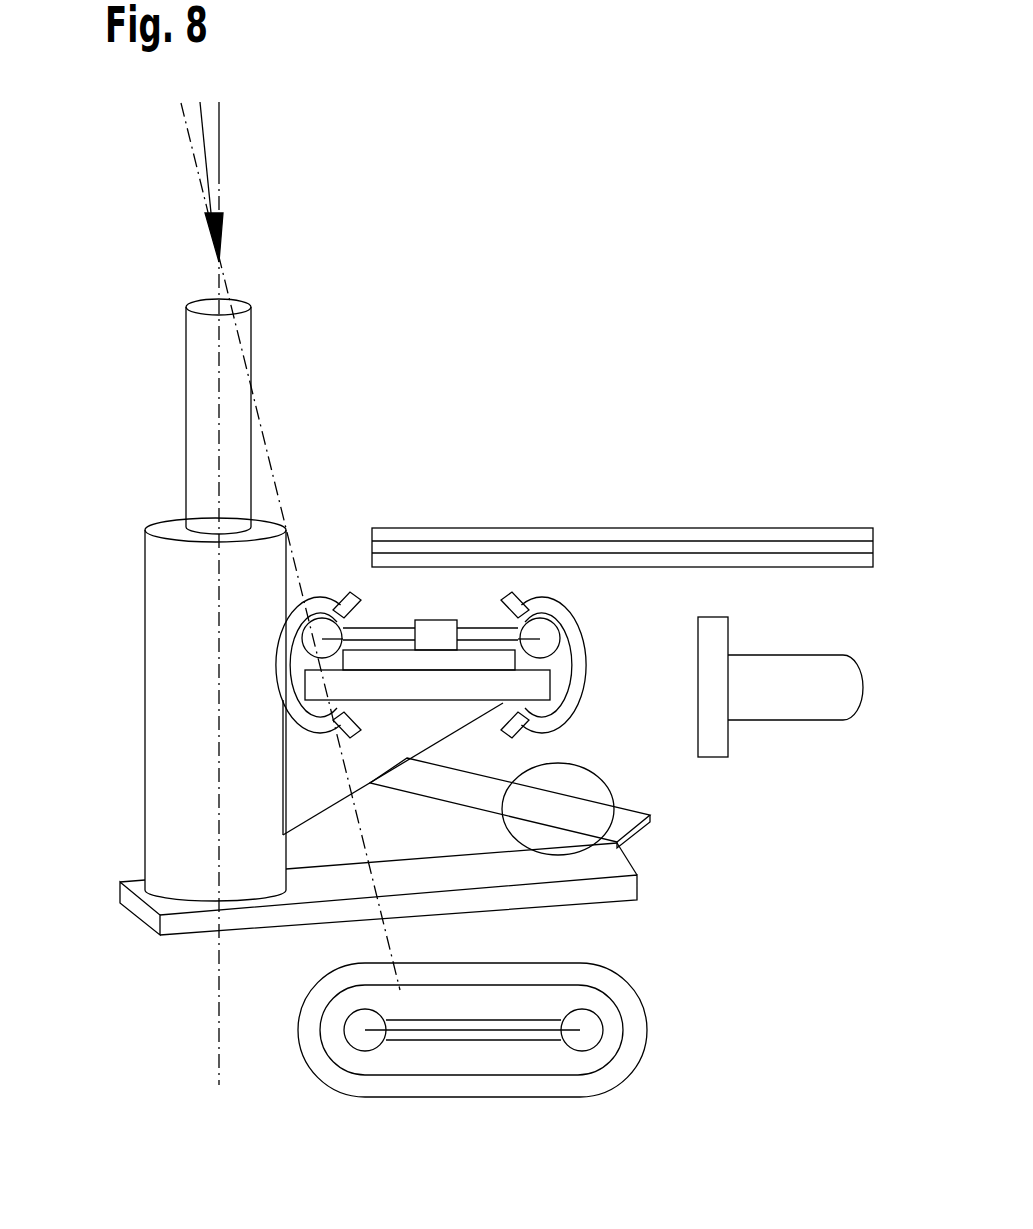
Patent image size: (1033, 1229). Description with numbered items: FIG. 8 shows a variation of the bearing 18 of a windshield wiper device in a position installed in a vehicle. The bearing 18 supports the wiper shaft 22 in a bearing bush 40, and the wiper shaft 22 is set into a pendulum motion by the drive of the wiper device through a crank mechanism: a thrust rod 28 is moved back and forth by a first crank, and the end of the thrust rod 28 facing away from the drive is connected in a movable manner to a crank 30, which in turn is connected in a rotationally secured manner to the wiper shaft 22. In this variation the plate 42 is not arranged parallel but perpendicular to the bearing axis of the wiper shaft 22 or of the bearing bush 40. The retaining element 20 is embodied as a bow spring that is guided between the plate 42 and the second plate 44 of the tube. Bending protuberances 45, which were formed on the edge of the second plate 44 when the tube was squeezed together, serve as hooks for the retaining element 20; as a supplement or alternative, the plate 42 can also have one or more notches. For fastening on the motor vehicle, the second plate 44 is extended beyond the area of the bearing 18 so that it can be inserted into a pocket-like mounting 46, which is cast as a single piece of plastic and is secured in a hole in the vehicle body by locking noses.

The bearing 18 is at (95, 822).
The retaining element 20 is at (322, 605).
The wiper shaft 22 is at (207, 373).
The thrust rod 28 is at (623, 817).
The crank 30 is at (610, 860).
The bearing bush 40 is at (183, 722).
The plate 42 is at (525, 688).
The second plate 44 is at (492, 630).
The bending protuberance 45 is at (545, 630).
The pocket-like mounting 46 is at (620, 990).